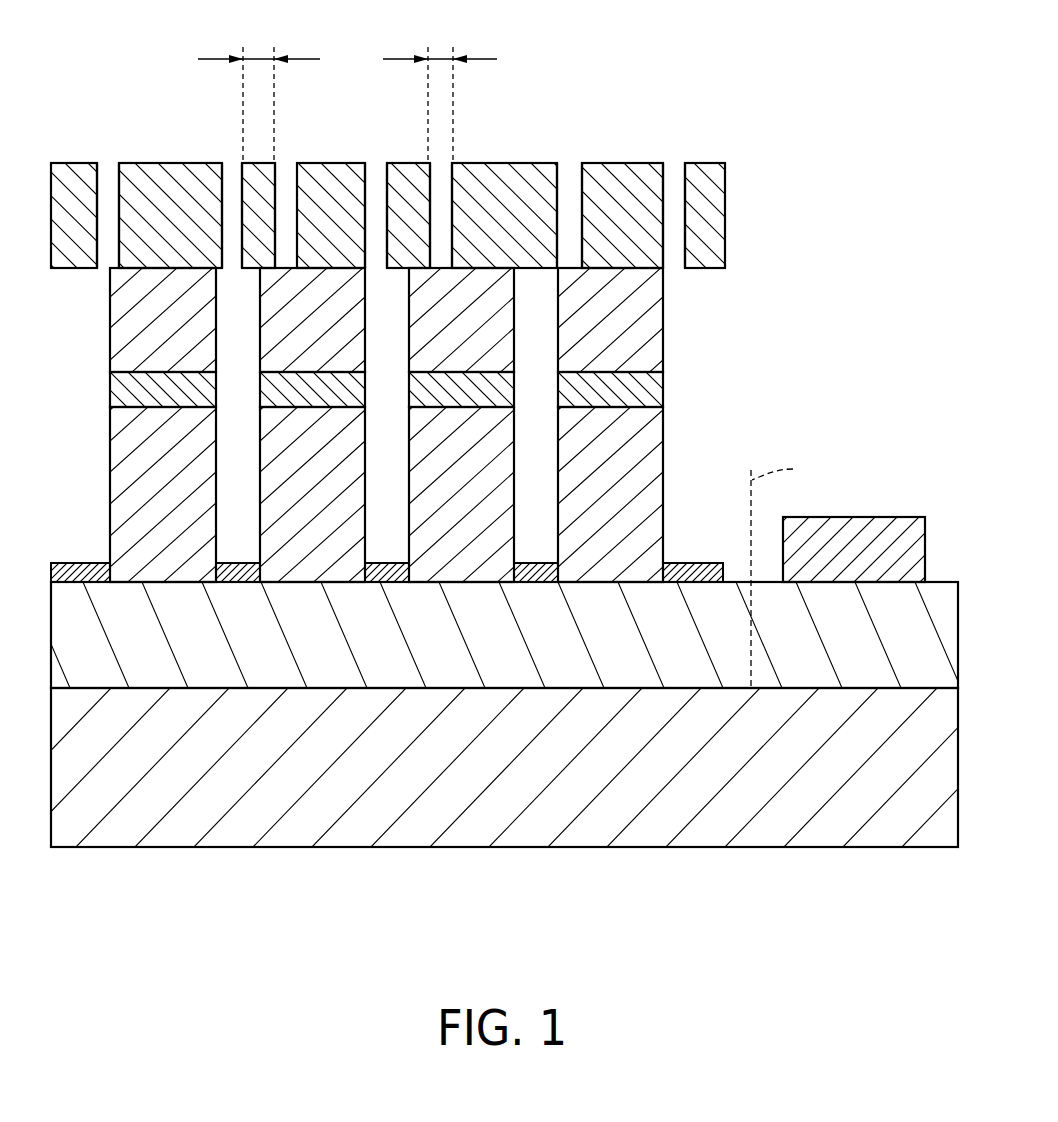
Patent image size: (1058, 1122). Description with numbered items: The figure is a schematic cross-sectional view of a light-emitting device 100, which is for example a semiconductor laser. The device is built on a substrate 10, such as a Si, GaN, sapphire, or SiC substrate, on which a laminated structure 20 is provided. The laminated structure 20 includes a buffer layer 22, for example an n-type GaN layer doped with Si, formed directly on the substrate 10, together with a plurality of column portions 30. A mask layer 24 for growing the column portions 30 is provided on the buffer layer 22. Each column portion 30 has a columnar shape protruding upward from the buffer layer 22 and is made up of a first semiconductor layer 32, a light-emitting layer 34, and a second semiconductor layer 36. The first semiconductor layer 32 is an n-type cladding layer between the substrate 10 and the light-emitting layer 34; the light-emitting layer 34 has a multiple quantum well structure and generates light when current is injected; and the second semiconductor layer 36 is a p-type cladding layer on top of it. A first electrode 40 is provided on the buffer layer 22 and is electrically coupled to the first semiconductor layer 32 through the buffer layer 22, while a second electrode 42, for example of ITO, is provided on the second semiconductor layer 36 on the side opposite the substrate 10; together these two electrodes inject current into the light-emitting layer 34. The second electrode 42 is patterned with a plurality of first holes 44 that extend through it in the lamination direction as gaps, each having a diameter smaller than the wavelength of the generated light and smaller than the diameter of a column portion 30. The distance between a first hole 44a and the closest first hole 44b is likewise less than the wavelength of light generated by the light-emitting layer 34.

The light-emitting device 100 is at (529, 475).
The substrate 10 is at (363, 772).
The laminated structure 20 is at (410, 394).
The buffer layer 22 is at (462, 650).
The mask layer 24 is at (688, 563).
The column portion 30 is at (427, 394).
The first semiconductor layer 32 is at (737, 341).
The light-emitting layer 34 is at (645, 397).
The second semiconductor layer 36 is at (643, 341).
The first electrode 40 is at (872, 540).
The second electrode 42 is at (613, 185).
The first hole 44 is at (110, 192).
The first hole 44a is at (233, 163).
The first hole 44b is at (286, 163).